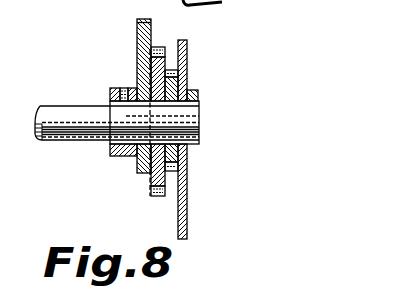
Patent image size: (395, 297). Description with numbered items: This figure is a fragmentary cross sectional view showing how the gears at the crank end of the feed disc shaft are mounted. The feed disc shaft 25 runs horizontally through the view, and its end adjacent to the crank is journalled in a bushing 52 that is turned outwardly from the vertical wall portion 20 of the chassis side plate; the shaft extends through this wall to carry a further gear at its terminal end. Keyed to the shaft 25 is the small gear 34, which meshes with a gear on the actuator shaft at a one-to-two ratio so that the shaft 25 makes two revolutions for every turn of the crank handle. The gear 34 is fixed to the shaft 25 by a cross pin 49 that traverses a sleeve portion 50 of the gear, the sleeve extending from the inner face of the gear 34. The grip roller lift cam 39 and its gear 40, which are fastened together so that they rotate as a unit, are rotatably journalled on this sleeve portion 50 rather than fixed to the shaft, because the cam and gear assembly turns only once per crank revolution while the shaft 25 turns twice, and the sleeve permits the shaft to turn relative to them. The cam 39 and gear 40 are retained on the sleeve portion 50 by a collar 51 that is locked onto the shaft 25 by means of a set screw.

The vertical wall portion 20 is at (187, 196).
The feed disc shaft 25 is at (62, 112).
The gear 34 is at (188, 68).
The grip roller lift cam 39 is at (137, 20).
The gear 40 is at (158, 48).
The cross pin 49 is at (150, 117).
The sleeve portion 50 is at (137, 158).
The collar 51 is at (113, 148).
The bushing 52 is at (197, 90).